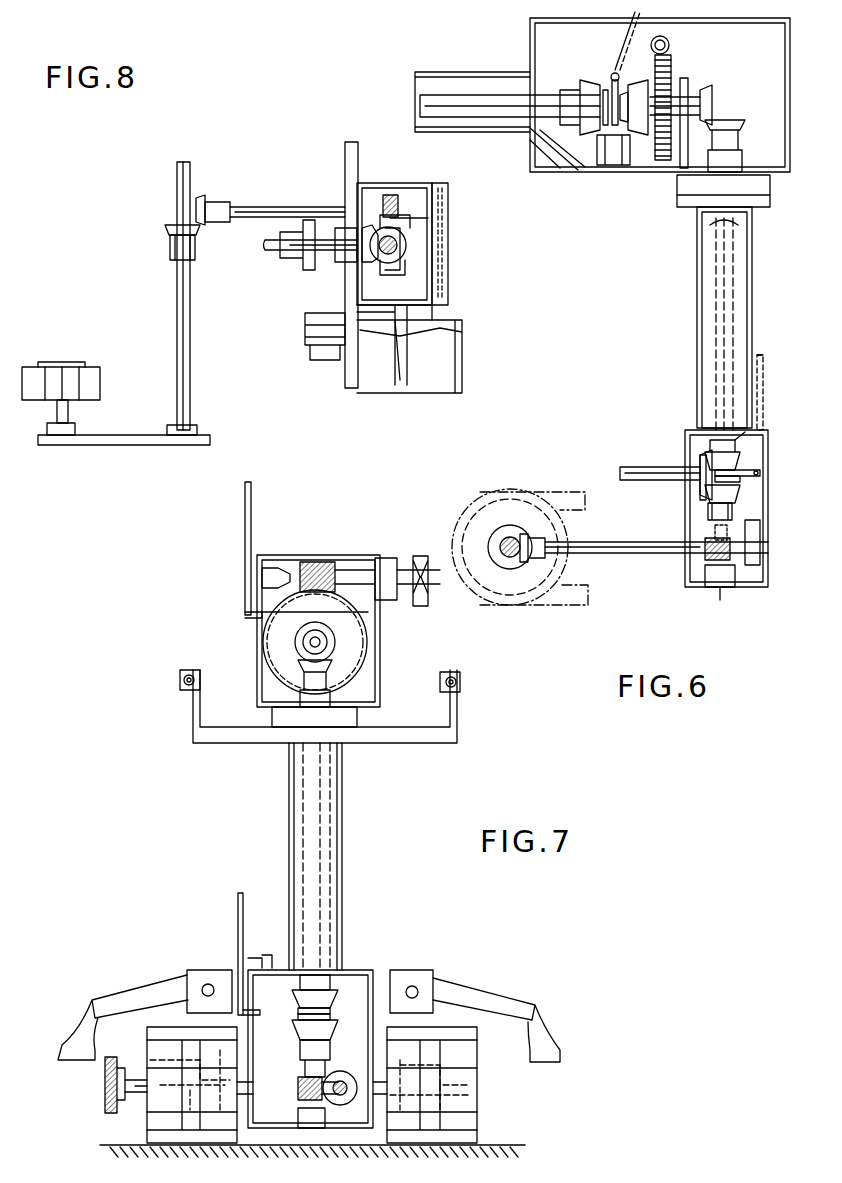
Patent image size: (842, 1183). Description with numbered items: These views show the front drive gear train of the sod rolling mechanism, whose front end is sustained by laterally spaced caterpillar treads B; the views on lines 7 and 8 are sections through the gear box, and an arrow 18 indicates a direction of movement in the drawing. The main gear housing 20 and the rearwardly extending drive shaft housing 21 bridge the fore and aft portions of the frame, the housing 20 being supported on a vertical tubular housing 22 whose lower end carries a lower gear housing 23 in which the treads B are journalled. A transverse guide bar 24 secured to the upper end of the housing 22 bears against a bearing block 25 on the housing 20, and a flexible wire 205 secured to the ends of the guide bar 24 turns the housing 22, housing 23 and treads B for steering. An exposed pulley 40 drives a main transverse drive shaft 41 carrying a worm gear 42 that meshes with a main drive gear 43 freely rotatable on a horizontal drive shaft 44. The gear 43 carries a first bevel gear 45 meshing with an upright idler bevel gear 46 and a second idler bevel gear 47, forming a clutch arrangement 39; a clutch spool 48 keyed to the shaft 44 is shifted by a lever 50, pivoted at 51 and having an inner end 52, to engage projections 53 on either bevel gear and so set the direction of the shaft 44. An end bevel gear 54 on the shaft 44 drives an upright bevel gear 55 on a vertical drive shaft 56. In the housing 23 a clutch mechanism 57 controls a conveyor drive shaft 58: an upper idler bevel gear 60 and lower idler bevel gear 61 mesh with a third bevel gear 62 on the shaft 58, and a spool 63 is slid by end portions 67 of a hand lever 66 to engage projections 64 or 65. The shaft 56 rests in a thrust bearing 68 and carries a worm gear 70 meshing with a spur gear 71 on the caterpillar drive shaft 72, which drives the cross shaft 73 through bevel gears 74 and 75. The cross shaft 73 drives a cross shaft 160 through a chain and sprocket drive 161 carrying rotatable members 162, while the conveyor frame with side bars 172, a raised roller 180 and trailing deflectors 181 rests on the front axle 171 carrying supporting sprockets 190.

In FIG. 6, the main gear housing 20 is at (530, 58).
In FIG. 7, the main gear housing 20 is at (250, 684).
In FIG. 6, the drive shaft housing 21 is at (420, 72).
In FIG. 7, the drive shaft housing 21 is at (380, 626).
In FIG. 6, the vertical tubular housing 22 is at (697, 290).
In FIG. 7, the vertical tubular housing 22 is at (342, 848).
In FIG. 6, the lower gear housing 23 is at (768, 516).
In FIG. 7, the lower gear housing 23 is at (380, 977).
In FIG. 8, the lower gear housing 23 is at (432, 270).
In FIG. 6, the transverse guide bar 24 is at (690, 200).
In FIG. 7, the transverse guide bar 24 is at (402, 745).
In FIG. 6, the bearing block 25 is at (770, 190).
In FIG. 7, the bearing block 25 is at (357, 717).
In FIG. 6, the clutch arrangement 39 is at (560, 148).
In FIG. 7, the pulley 40 is at (418, 556).
In FIG. 6, the main transverse drive shaft 41 is at (672, 46).
In FIG. 7, the main transverse drive shaft 41 is at (292, 570).
In FIG. 6, the worm gear 42 is at (662, 36).
In FIG. 7, the worm gear 42 is at (318, 562).
In FIG. 6, the main drive gear 43 is at (688, 80).
In FIG. 7, the main drive gear 43 is at (270, 600).
In FIG. 6, the horizontal drive shaft 44 is at (420, 100).
In FIG. 7, the horizontal drive shaft 44 is at (308, 642).
In FIG. 6, the first bevel gear 45 is at (630, 92).
In FIG. 6, the upright idler bevel gear 46 is at (572, 172).
In FIG. 6, the second idler bevel gear 47 is at (545, 150).
In FIG. 6, the clutch spool 48 is at (603, 90).
In FIG. 6, the clutch lever 50 is at (638, 30).
In FIG. 7, the clutch lever 50 is at (245, 528).
In FIG. 6, the pivot 51 is at (612, 80).
In FIG. 7, the pivot 51 is at (252, 618).
In FIG. 6, the inner end of lever 52 is at (612, 165).
In FIG. 6, the projections 53 is at (582, 82).
In FIG. 6, the end bevel gear 54 is at (712, 98).
In FIG. 7, the end bevel gear 54 is at (322, 642).
In FIG. 6, the upright bevel gear 55 is at (742, 135).
In FIG. 7, the upright bevel gear 55 is at (330, 665).
In FIG. 6, the vertical drive shaft 56 is at (716, 258).
In FIG. 7, the vertical drive shaft 56 is at (303, 802).
In FIG. 8, the vertical drive shaft 56 is at (406, 246).
In FIG. 6, the clutch mechanism 57 is at (700, 497).
In FIG. 7, the clutch mechanism 57 is at (330, 1000).
In FIG. 8, the clutch mechanism 57 is at (368, 258).
In FIG. 6, the drive shaft 58 is at (640, 467).
In FIG. 8, the drive shaft 58 is at (278, 252).
In FIG. 6, the upper idler bevel gear 60 is at (745, 432).
In FIG. 7, the upper idler bevel gear 60 is at (290, 975).
In FIG. 8, the upper idler bevel gear 60 is at (405, 240).
In FIG. 6, the lower idler bevel gear 61 is at (732, 500).
In FIG. 7, the lower idler bevel gear 61 is at (330, 1042).
In FIG. 6, the third bevel gear 62 is at (700, 465).
In FIG. 7, the third bevel gear 62 is at (335, 1010).
In FIG. 8, the third bevel gear 62 is at (368, 228).
In FIG. 6, the clutch spool 63 is at (760, 472).
In FIG. 7, the clutch spool 63 is at (330, 1024).
In FIG. 6, the projections 64 is at (697, 418).
In FIG. 7, the projections 64 is at (292, 1000).
In FIG. 6, the projections 65 is at (708, 500).
In FIG. 7, the projections 65 is at (296, 1028).
In FIG. 6, the hand lever 66 is at (765, 360).
In FIG. 7, the hand lever 66 is at (238, 904).
In FIG. 8, the hand lever 66 is at (448, 310).
In FIG. 6, the end portions 67 is at (740, 480).
In FIG. 8, the end portions 67 is at (400, 276).
In FIG. 6, the thrust bearing 68 is at (718, 575).
In FIG. 7, the thrust bearing 68 is at (310, 1128).
In FIG. 6, the worm gear 70 is at (705, 558).
In FIG. 7, the worm gear 70 is at (300, 1097).
In FIG. 6, the spur gear 71 is at (715, 534).
In FIG. 7, the spur gear 71 is at (345, 1100).
In FIG. 8, the spur gear 71 is at (405, 200).
In FIG. 6, the caterpillar drive shaft 72 is at (615, 555).
In FIG. 7, the caterpillar drive shaft 72 is at (347, 1080).
In FIG. 8, the caterpillar drive shaft 72 is at (280, 207).
In FIG. 6, the cross shaft 73 is at (508, 558).
In FIG. 7, the cross shaft 73 is at (138, 1092).
In FIG. 8, the cross shaft 73 is at (190, 316).
In FIG. 6, the bevel gear 74 is at (520, 545).
In FIG. 8, the bevel gear 74 is at (218, 202).
In FIG. 6, the bevel gear 75 is at (512, 570).
In FIG. 8, the bevel gear 75 is at (170, 246).
In FIG. 8, the cross shaft 160 is at (68, 414).
In FIG. 7, the chain and sprocket drive 161 is at (105, 1105).
In FIG. 8, the chain and sprocket drive 161 is at (110, 445).
In FIG. 8, the rotatable members 162 is at (100, 382).
In FIG. 8, the front axle 171 is at (405, 315).
In FIG. 8, the side bars 172 is at (345, 154).
In FIG. 8, the raised roller 180 is at (310, 360).
In FIG. 7, the trailing deflector 181 is at (70, 1040).
In FIG. 7, the supporting sprockets 190 is at (182, 1056).
In FIG. 7, the flexible cord or wire 205 is at (180, 678).
In FIG. 6, the section line 7— 7 is at (760, 110).
In FIG. 6, the section line 8— 8 is at (685, 430).
In FIG. 6, the direction arrow 18 is at (705, 380).
In FIG. 6, the caterpillar treads B is at (480, 492).
In FIG. 7, the caterpillar treads B is at (484, 1056).
In FIG. 8, the caterpillar treads B is at (470, 355).
In FIG. 6, the direction F is at (691, 44).
In FIG. 7, the direction F is at (368, 558).